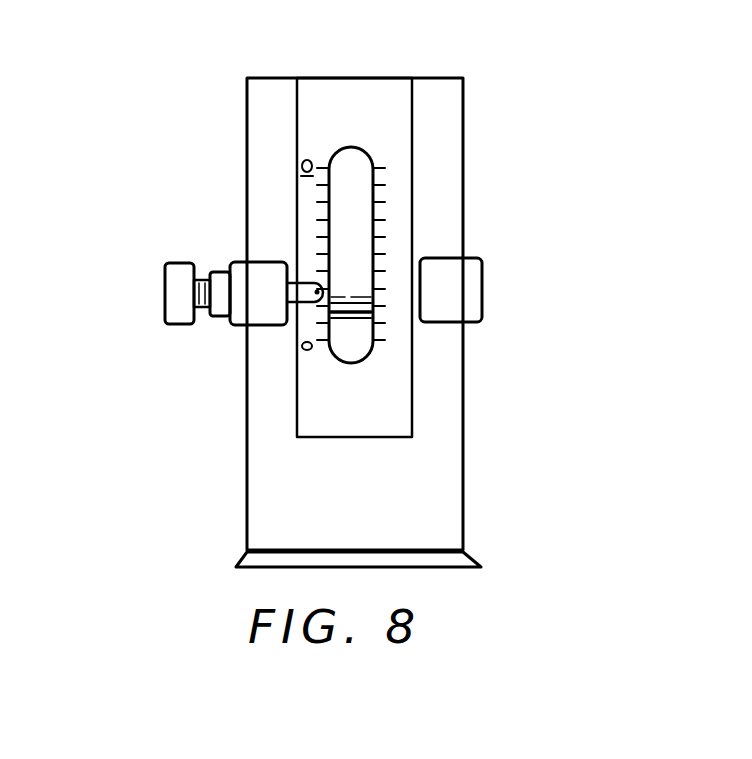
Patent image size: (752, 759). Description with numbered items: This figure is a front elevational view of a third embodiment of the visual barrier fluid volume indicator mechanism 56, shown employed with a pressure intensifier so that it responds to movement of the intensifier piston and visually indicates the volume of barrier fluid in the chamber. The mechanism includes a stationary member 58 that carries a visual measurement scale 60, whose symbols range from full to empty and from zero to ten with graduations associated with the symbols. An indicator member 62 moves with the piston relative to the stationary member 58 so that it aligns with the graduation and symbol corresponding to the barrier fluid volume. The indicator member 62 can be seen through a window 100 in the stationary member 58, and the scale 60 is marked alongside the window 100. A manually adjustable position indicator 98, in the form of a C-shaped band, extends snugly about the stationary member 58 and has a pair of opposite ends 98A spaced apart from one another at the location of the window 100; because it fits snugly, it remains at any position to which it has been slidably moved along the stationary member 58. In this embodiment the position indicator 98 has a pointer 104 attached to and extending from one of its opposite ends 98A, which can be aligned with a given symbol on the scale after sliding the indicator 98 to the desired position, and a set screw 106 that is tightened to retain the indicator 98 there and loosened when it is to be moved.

The visual barrier fluid volume indicator mechanism 56 is at (356, 292).
The stationary member 58 is at (453, 447).
The visual measurement scale 60 is at (382, 148).
The indicator member 62 is at (353, 303).
The manually adjustable position indicator 98 is at (157, 248).
The opposite ends 98A is at (440, 302).
The window 100 is at (378, 207).
The pointer 104 is at (305, 283).
The set screw 106 is at (163, 302).